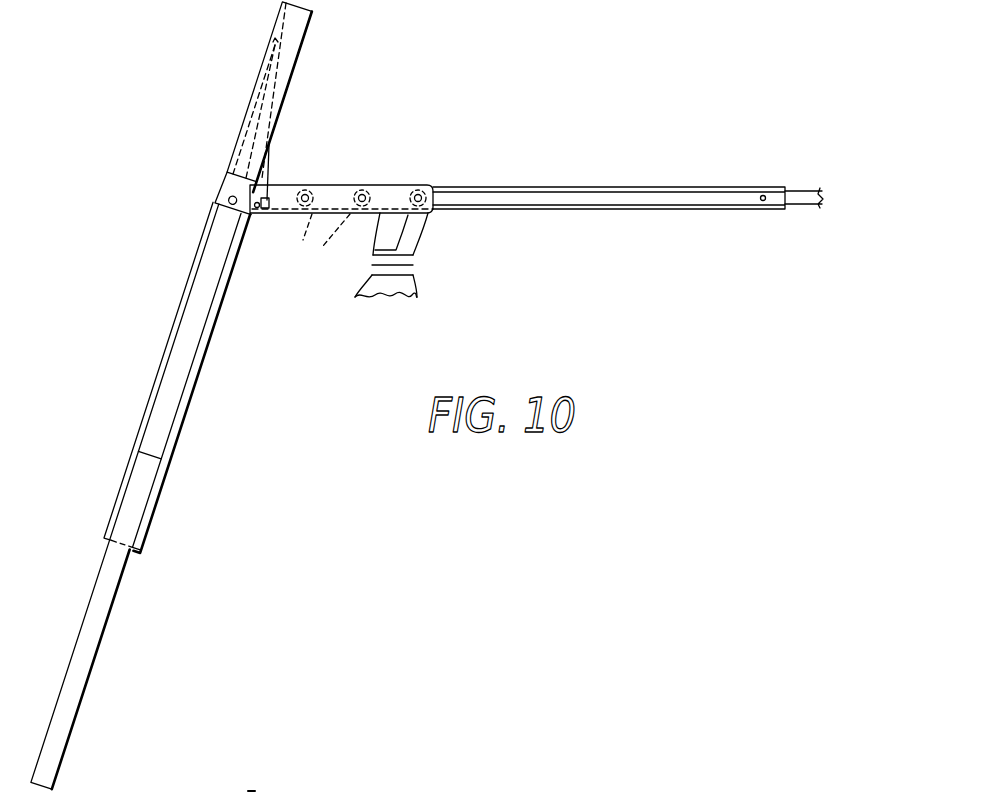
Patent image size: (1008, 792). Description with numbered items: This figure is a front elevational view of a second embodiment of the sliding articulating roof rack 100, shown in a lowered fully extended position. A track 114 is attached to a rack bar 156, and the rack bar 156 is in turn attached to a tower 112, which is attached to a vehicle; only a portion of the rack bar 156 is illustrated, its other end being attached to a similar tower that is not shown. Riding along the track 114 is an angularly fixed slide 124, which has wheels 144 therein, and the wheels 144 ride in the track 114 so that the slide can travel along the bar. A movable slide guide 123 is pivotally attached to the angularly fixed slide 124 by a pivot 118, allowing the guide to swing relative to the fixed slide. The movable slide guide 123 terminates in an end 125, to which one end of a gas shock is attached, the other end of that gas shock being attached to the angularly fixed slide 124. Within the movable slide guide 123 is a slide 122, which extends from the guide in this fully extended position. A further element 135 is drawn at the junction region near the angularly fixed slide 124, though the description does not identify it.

The sliding articulating roof rack 100 is at (167, 260).
The tower 112 is at (411, 240).
The track 114 is at (592, 187).
The pivot 118 is at (228, 192).
The slide 122 is at (112, 605).
The movable slide guide 123 is at (210, 337).
The angularly fixed slide 124 is at (430, 186).
The end 125 is at (246, 107).
The bracket 135 is at (268, 172).
The wheels 144 is at (313, 246).
The rack bar 156 is at (800, 190).